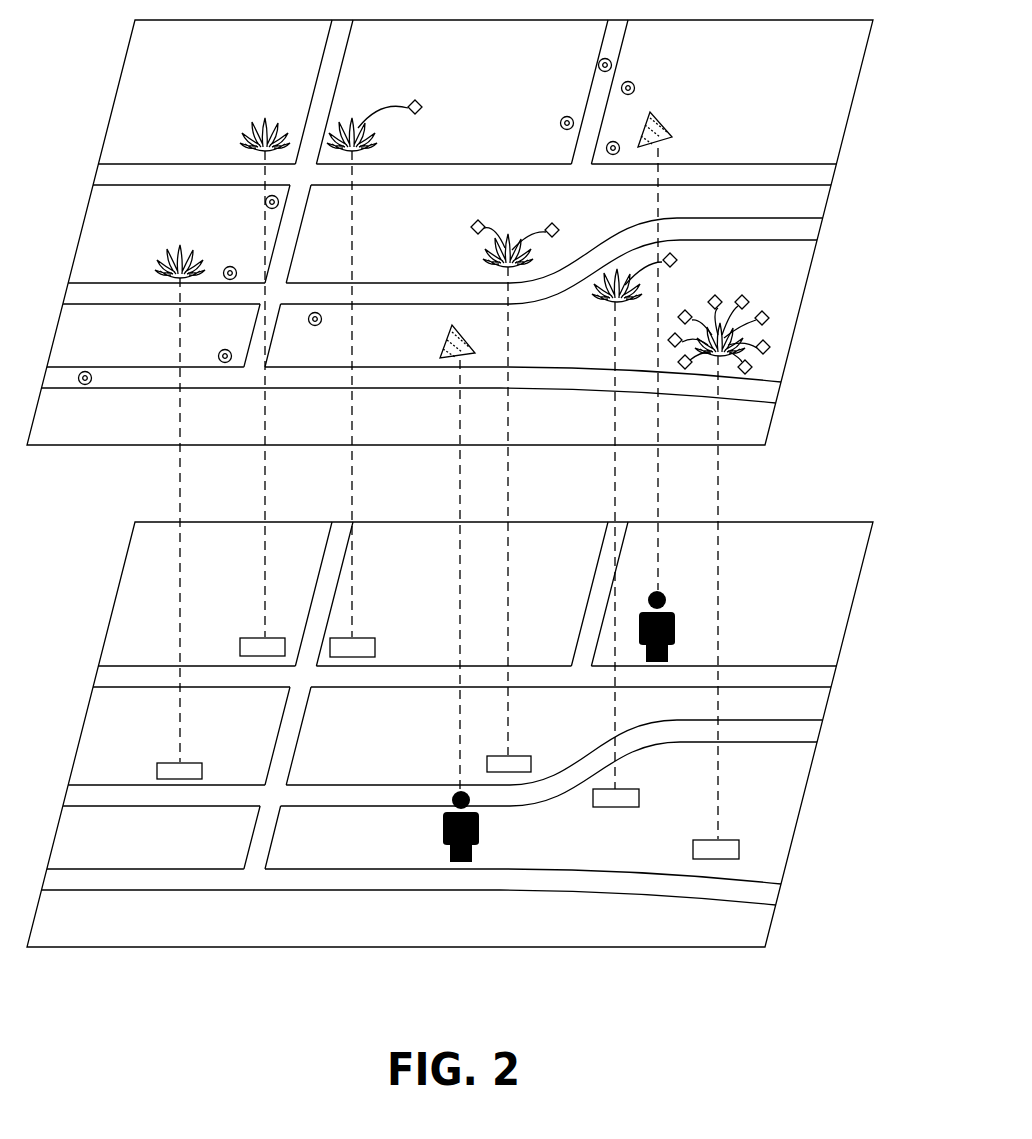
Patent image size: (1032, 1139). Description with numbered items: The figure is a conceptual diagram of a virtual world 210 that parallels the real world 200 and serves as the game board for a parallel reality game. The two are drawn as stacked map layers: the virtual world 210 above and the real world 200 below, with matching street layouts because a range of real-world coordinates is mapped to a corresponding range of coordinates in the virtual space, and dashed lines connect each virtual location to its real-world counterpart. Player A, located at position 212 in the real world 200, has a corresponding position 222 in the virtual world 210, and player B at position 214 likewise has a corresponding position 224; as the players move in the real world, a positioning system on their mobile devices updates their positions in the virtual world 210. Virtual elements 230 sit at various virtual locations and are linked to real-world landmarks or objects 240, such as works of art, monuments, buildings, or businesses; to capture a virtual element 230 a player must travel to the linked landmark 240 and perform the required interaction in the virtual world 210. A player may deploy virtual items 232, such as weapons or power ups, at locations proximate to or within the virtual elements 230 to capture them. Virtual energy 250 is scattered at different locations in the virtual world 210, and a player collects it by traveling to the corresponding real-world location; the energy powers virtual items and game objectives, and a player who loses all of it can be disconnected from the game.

The real world 200 is at (852, 605).
The virtual world 210 is at (842, 143).
The position of player A in the real world 212 is at (442, 832).
The position of player B in the real world 214 is at (677, 618).
The corresponding position of player A in the virtual world 222 is at (478, 352).
The corresponding position of player B in the virtual world 224 is at (676, 138).
The virtual elements 230 is at (268, 124).
The virtual items 232 is at (422, 102).
The real-world landmarks or objects 240 is at (257, 637).
The virtual energy 250 is at (640, 89).